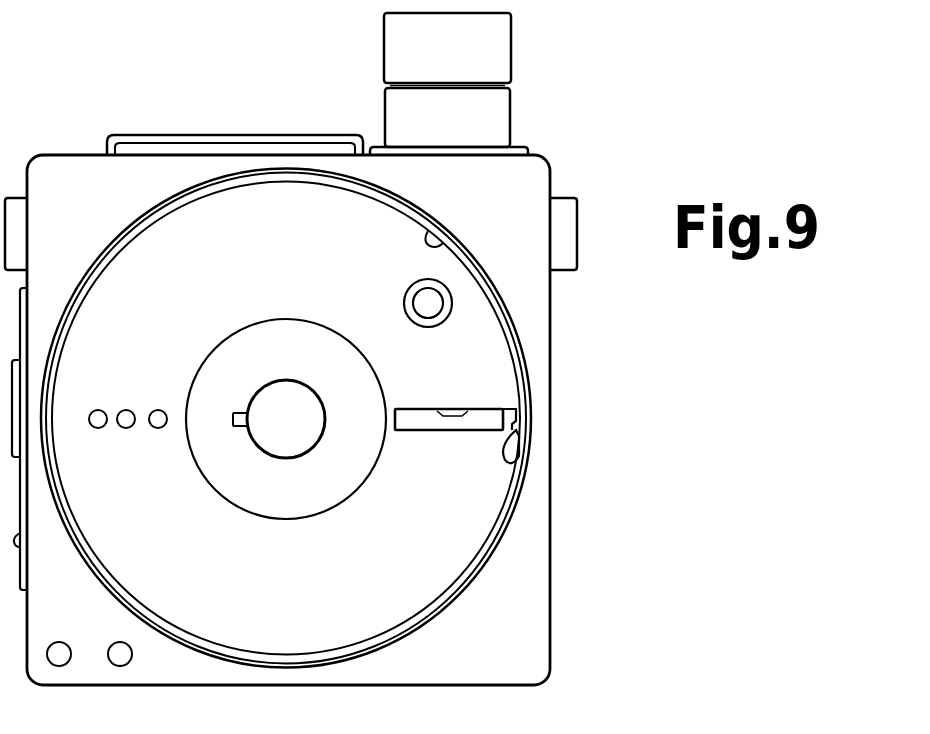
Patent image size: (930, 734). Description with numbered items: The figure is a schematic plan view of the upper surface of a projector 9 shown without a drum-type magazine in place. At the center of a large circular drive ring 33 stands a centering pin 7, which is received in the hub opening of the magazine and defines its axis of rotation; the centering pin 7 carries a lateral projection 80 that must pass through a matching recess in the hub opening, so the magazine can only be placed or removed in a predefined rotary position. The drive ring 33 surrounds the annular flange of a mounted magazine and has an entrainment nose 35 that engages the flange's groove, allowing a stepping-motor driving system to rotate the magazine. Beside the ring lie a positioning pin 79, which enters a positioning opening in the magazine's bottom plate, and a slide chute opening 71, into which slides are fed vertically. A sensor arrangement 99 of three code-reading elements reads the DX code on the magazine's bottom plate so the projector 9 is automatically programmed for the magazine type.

The projector 9 is at (80, 153).
The centering pin 7 is at (309, 452).
The lateral projection 80 is at (233, 420).
The sensor arrangement 99 is at (134, 392).
The drive ring 33 is at (441, 248).
The positioning pin 79 is at (428, 303).
The slide chute opening 71 is at (466, 412).
The entrainment nose 35 is at (505, 458).